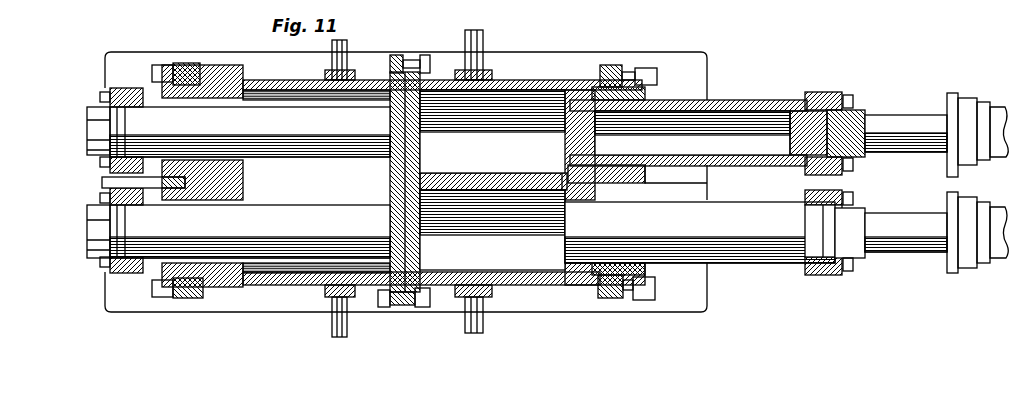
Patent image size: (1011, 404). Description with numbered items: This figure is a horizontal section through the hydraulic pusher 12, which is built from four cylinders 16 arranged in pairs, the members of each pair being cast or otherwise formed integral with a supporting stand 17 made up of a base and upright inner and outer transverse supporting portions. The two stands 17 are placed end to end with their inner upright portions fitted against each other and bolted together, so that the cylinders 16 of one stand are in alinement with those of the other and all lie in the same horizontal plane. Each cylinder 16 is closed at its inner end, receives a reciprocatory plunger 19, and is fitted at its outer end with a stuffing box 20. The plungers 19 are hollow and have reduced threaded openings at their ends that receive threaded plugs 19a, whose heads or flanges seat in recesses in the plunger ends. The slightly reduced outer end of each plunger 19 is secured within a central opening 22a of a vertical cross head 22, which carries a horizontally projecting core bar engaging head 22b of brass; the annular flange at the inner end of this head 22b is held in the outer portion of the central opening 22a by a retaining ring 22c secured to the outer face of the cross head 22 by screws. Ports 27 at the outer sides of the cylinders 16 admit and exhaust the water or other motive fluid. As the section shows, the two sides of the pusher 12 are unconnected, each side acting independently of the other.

The hydraulic pusher 12 is at (535, 313).
The cylinder 16 is at (268, 74).
The supporting stand 17 is at (544, 58).
The plunger 19 is at (472, 185).
The threaded plug 19a is at (388, 130).
The stuffing box 20 is at (185, 64).
The cross head 22 is at (104, 189).
The central opening 22a is at (127, 90).
The core bar engaging head 22b is at (97, 127).
The retaining ring 22c is at (105, 92).
The port 27 is at (466, 38).